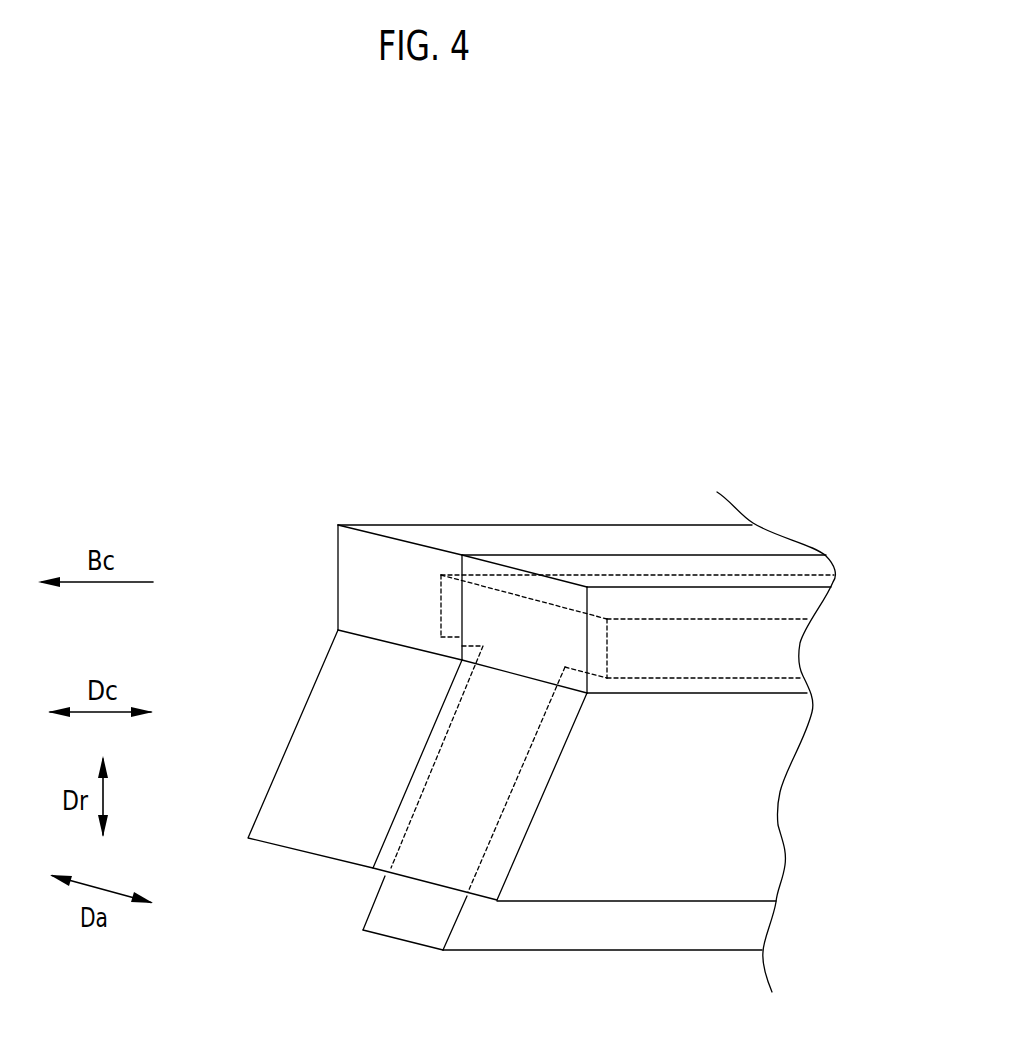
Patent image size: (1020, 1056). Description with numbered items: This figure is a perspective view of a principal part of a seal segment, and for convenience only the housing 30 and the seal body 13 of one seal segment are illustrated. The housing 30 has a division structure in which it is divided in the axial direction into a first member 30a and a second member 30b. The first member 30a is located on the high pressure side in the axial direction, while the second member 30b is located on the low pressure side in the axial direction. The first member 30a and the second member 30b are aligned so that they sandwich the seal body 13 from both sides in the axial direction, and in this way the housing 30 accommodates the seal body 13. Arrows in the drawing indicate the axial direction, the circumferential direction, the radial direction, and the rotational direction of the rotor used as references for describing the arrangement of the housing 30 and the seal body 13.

The housing 30 is at (654, 504).
The first member 30a is at (507, 847).
The second member 30b is at (355, 703).
The seal body 13 is at (678, 925).